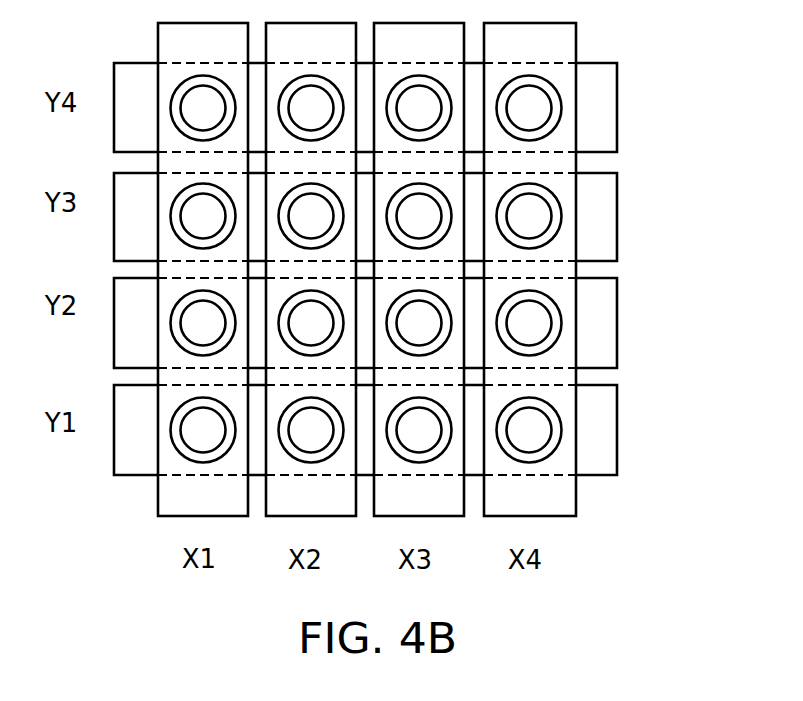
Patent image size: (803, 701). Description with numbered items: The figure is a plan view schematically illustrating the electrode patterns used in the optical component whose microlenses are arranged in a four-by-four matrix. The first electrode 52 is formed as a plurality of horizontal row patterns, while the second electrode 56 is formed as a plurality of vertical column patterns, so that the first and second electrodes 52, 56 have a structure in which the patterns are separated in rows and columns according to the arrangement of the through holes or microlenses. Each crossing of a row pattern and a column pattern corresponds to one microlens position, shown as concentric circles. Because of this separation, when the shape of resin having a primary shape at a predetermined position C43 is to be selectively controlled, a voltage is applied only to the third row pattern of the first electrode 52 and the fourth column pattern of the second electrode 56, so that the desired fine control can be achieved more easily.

The first electrode 52 is at (617, 118).
The second electrode 56 is at (576, 510).
The predetermined position C43 is at (522, 220).